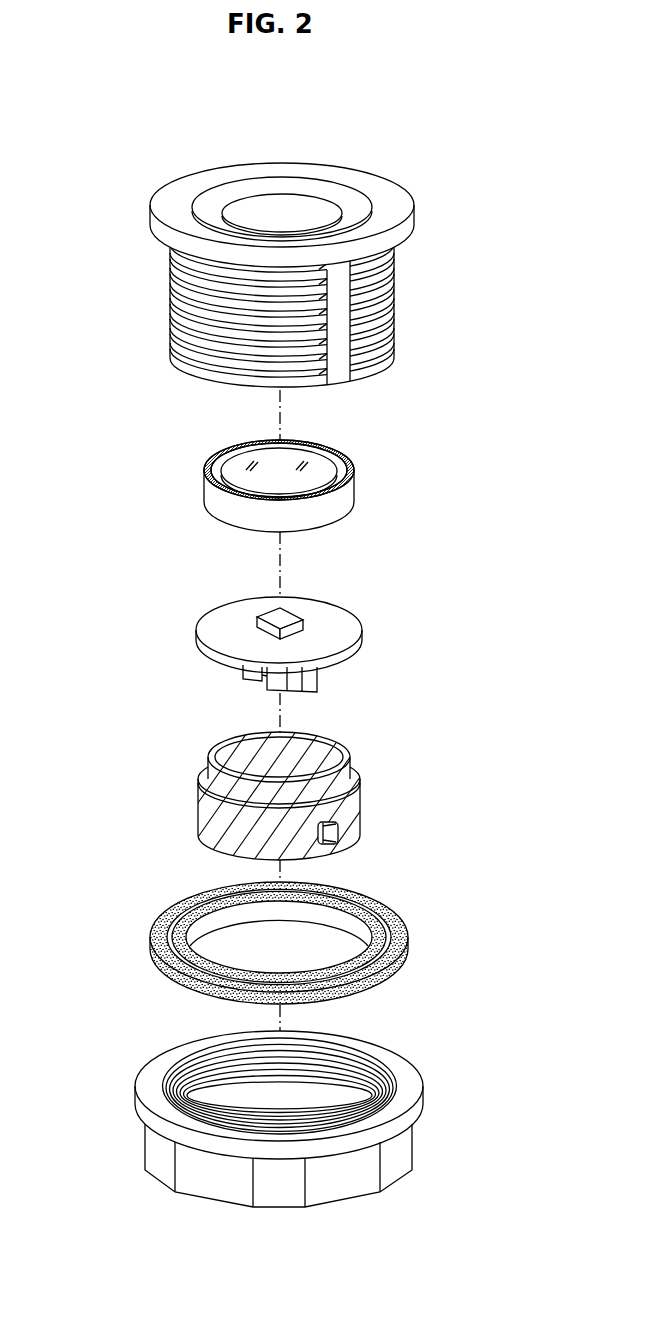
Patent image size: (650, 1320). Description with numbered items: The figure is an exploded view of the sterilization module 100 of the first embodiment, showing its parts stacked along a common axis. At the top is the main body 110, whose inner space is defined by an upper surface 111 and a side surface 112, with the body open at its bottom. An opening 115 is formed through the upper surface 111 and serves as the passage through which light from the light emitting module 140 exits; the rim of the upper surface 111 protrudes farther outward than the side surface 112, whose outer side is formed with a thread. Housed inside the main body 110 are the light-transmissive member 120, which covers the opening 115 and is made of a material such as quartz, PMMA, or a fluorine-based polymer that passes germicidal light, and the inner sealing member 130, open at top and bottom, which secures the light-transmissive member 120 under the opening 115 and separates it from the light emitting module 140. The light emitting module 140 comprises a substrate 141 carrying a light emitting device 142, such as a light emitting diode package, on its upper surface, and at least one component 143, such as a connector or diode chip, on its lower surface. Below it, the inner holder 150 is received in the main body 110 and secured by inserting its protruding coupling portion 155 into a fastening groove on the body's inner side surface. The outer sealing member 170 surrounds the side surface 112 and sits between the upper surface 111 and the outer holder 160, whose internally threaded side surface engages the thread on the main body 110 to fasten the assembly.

The sterilization module 100 is at (110, 141).
The main body 110 is at (137, 280).
The upper surface 111 is at (390, 206).
The side surface 112 is at (390, 292).
The opening 115 is at (281, 210).
The light-transmissive member 120 is at (300, 464).
The inner sealing member 130 is at (346, 497).
The light emitting module 140 is at (436, 605).
The substrate 141 is at (348, 630).
The light emitting device 142 is at (290, 618).
The component 143 is at (310, 676).
The inner holder 150 is at (352, 770).
The coupling portion 155 is at (343, 833).
The outer holder 160 is at (403, 1152).
The outer sealing member 170 is at (408, 947).